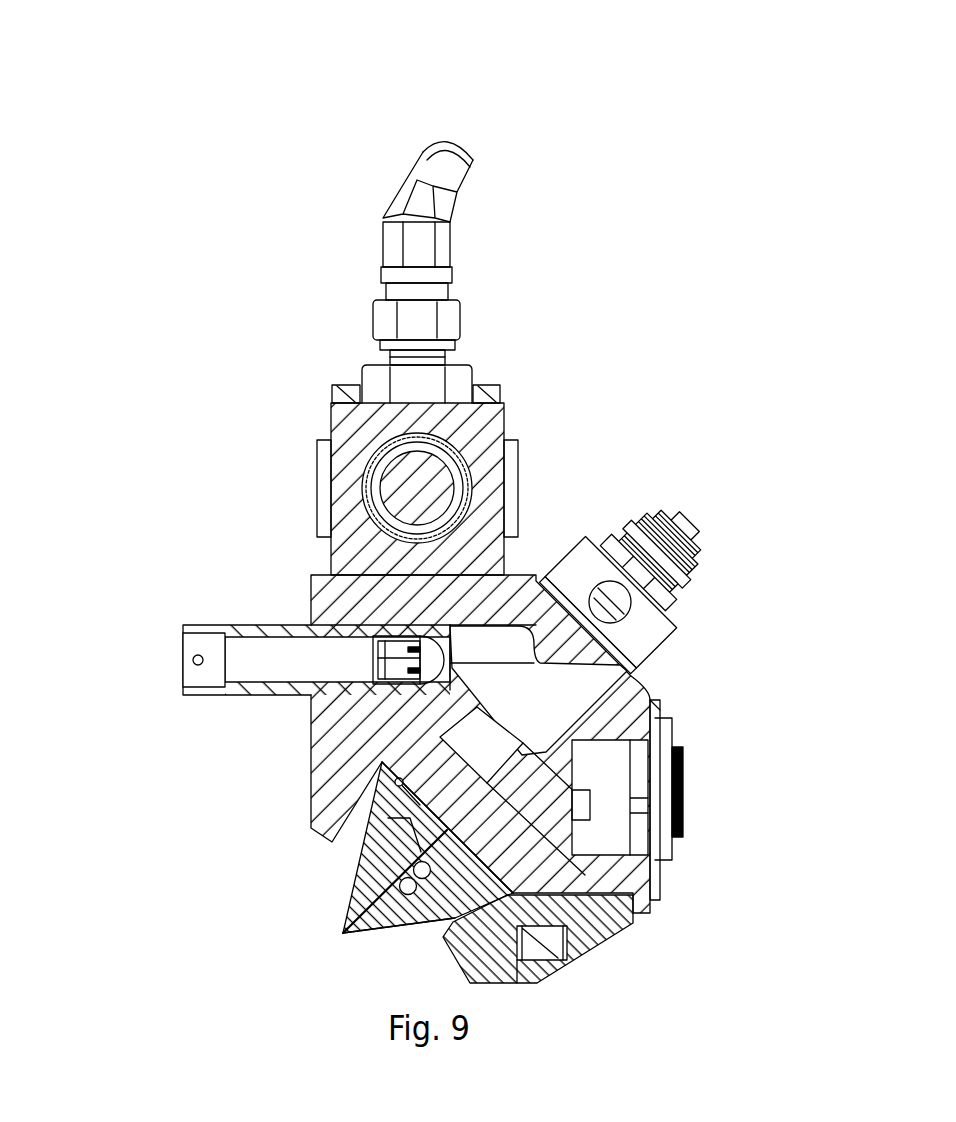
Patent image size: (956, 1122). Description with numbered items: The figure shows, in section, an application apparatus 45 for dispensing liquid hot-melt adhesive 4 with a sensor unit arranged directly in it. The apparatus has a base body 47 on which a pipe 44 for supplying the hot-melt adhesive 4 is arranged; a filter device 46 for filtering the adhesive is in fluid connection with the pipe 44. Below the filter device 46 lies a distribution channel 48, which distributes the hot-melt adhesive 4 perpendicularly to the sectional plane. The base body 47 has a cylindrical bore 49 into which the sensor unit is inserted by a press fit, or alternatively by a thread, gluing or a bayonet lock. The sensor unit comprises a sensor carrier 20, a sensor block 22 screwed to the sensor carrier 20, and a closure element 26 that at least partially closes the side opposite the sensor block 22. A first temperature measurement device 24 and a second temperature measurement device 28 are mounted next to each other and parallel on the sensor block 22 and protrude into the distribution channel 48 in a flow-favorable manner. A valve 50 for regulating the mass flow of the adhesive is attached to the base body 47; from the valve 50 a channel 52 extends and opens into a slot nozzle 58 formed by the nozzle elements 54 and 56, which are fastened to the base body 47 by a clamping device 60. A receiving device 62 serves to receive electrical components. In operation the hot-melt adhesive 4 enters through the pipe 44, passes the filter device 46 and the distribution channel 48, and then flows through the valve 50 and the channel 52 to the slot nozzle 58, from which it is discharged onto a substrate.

The hot-melt adhesive 4 is at (458, 131).
The sensor carrier 20 is at (251, 705).
The sensor block 22 is at (494, 637).
The first temperature measurement device 24 is at (412, 650).
The closure element 26 is at (196, 645).
The second temperature measurement device 28 is at (412, 671).
The pipe 44 is at (481, 202).
The application apparatus 45 is at (476, 555).
The filter device 46 is at (425, 488).
The base body 47 is at (620, 875).
The distribution channel 48 is at (494, 592).
The cylindrical bore 49 is at (306, 618).
The valve 50 is at (640, 617).
The channel 52 is at (430, 779).
The nozzle element 54 is at (325, 893).
The nozzle element 56 is at (403, 915).
The slot nozzle 58 is at (342, 933).
The clamping device 60 is at (587, 917).
The receiving device 62 is at (620, 835).